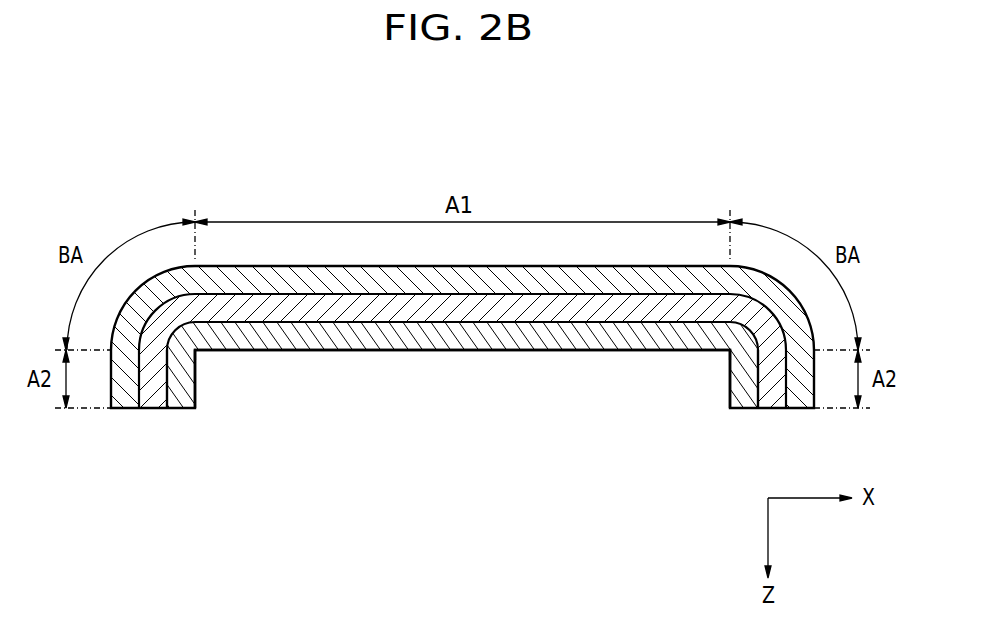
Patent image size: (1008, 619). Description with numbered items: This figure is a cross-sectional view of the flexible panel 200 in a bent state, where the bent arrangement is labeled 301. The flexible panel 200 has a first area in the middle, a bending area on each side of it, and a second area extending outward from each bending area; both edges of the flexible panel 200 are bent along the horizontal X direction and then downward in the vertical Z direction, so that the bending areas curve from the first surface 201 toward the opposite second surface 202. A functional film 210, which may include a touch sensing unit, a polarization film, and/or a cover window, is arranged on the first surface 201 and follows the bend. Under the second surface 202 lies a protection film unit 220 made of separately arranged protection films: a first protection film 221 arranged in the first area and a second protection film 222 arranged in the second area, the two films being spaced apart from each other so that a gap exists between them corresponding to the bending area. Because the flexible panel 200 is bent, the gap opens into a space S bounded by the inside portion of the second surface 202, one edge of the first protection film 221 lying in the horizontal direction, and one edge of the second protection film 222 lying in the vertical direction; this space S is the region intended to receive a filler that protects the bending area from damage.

The display device 301 is at (196, 158).
The first surface 201 is at (535, 290).
The second surface 202 is at (511, 312).
The flexible panel 200 is at (770, 400).
The functional film 210 is at (800, 400).
The protection film unit 220 is at (592, 366).
The first protection film 221 is at (442, 340).
The second protection film 222 is at (180, 398).
The space S is at (191, 349).